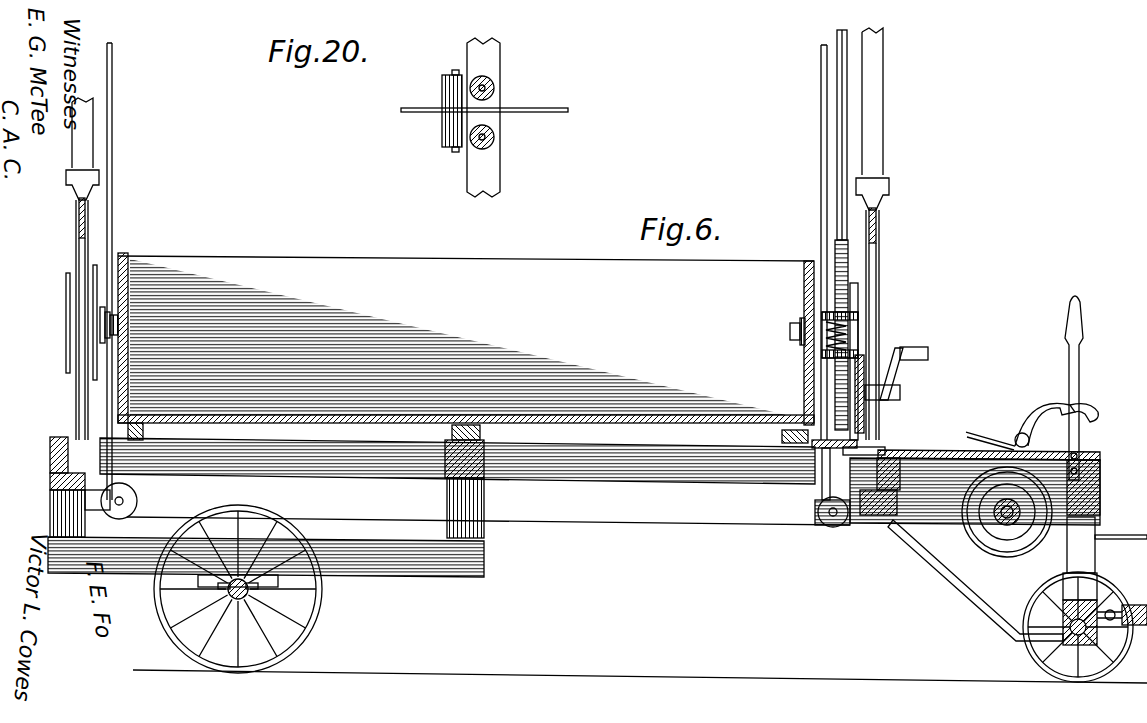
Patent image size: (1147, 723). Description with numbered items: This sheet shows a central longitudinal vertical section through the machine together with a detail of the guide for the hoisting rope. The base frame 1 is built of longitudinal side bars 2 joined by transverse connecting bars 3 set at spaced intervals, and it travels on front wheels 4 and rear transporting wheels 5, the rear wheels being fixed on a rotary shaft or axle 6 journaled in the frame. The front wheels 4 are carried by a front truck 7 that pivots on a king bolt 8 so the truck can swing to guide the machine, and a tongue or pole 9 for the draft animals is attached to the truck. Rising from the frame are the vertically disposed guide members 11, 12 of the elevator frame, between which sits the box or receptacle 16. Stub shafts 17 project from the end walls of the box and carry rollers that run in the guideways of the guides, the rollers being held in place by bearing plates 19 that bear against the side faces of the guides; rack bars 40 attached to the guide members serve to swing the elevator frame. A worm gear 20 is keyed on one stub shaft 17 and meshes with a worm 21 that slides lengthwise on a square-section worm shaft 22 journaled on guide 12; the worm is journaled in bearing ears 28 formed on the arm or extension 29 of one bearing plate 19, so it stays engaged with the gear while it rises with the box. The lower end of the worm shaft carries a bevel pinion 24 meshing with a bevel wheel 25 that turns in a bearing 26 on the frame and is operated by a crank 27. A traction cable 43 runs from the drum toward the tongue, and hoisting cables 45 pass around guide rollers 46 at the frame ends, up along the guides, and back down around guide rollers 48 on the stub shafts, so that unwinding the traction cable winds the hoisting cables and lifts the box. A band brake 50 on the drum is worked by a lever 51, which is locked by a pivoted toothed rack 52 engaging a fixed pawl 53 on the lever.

In FIG. 6, the base frame 1 is at (48, 510).
In FIG. 6, the longitudinal side bar 2 is at (676, 478).
In FIG. 6, the transverse connecting bar 3 is at (50, 470).
In FIG. 6, the front wheel 4 is at (1035, 648).
In FIG. 6, the rear transporting wheel 5 is at (323, 618).
In FIG. 6, the rotary shaft or axle 6 is at (236, 600).
In FIG. 20, the front truck 7 is at (503, 50).
In FIG. 6, the front truck 7 is at (1045, 605).
In FIG. 6, the king bolt 8 is at (1055, 670).
In FIG. 6, the tongue or pole 9 is at (1122, 643).
In FIG. 6, the guide member 11 is at (83, 133).
In FIG. 6, the guide member 12 is at (870, 146).
In FIG. 6, the box or receptacle 16 is at (470, 250).
In FIG. 6, the stub shaft 17 is at (127, 298).
In FIG. 6, the bearing plate 19 is at (66, 330).
In FIG. 6, the worm gear 20 is at (848, 275).
In FIG. 6, the worm 21 is at (822, 344).
In FIG. 6, the worm shaft 22 is at (837, 110).
In FIG. 6, the bevel pinion 24 is at (822, 450).
In FIG. 6, the bevel wheel 25 is at (866, 417).
In FIG. 6, the bearing 26 is at (887, 380).
In FIG. 6, the crank 27 is at (928, 356).
In FIG. 6, the bearing portion or ear 28 is at (826, 318).
In FIG. 6, the arm or extension 29 is at (858, 335).
In FIG. 6, the rack bar 40 is at (84, 216).
In FIG. 20, the flexible traction element or cable 43 is at (550, 97).
In FIG. 6, the flexible traction element or cable 43 is at (1120, 542).
In FIG. 6, the flexible hoisting element or cable 45 is at (112, 190).
In FIG. 6, the guide roller 46 is at (138, 500).
In FIG. 6, the guide roller 48 is at (95, 318).
In FIG. 6, the band brake 50 is at (985, 550).
In FIG. 6, the lever 51 is at (1068, 366).
In FIG. 6, the pivoted toothed rack 52 is at (1045, 422).
In FIG. 6, the fixed pawl 53 is at (1090, 428).